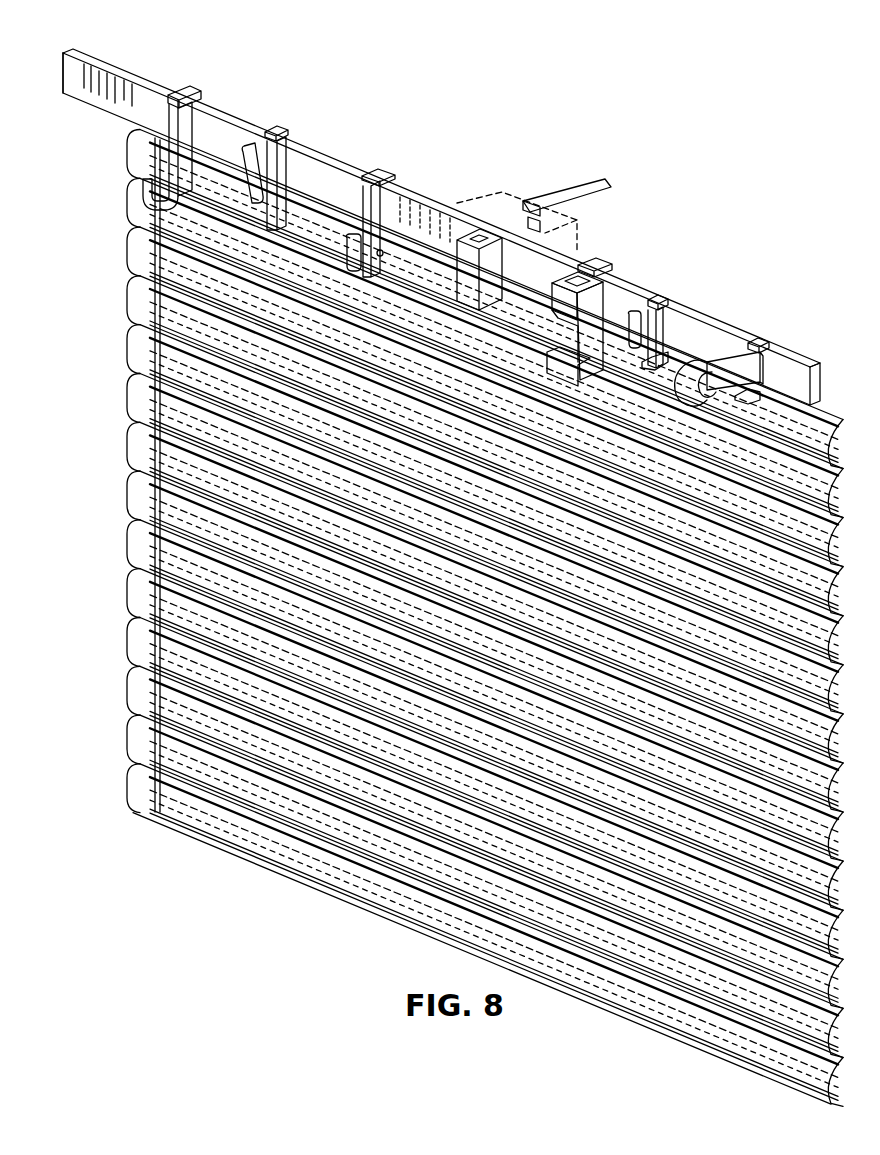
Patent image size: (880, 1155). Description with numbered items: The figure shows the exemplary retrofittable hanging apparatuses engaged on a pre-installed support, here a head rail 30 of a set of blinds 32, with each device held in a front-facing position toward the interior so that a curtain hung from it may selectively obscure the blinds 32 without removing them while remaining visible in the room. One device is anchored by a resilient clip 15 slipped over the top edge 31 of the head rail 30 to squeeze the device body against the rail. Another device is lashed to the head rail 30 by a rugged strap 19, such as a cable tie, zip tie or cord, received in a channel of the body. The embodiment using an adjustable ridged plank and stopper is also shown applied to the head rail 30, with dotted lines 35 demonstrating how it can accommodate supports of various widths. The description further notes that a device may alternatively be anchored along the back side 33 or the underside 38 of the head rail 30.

The resilient clip 15 is at (597, 272).
The rugged strap 19 is at (658, 299).
The head rail 30 is at (423, 209).
The top edge 31 is at (77, 53).
The blinds 32 is at (137, 297).
The back side 33 is at (142, 77).
The dotted lines 35 is at (575, 244).
The underside 38 is at (114, 127).